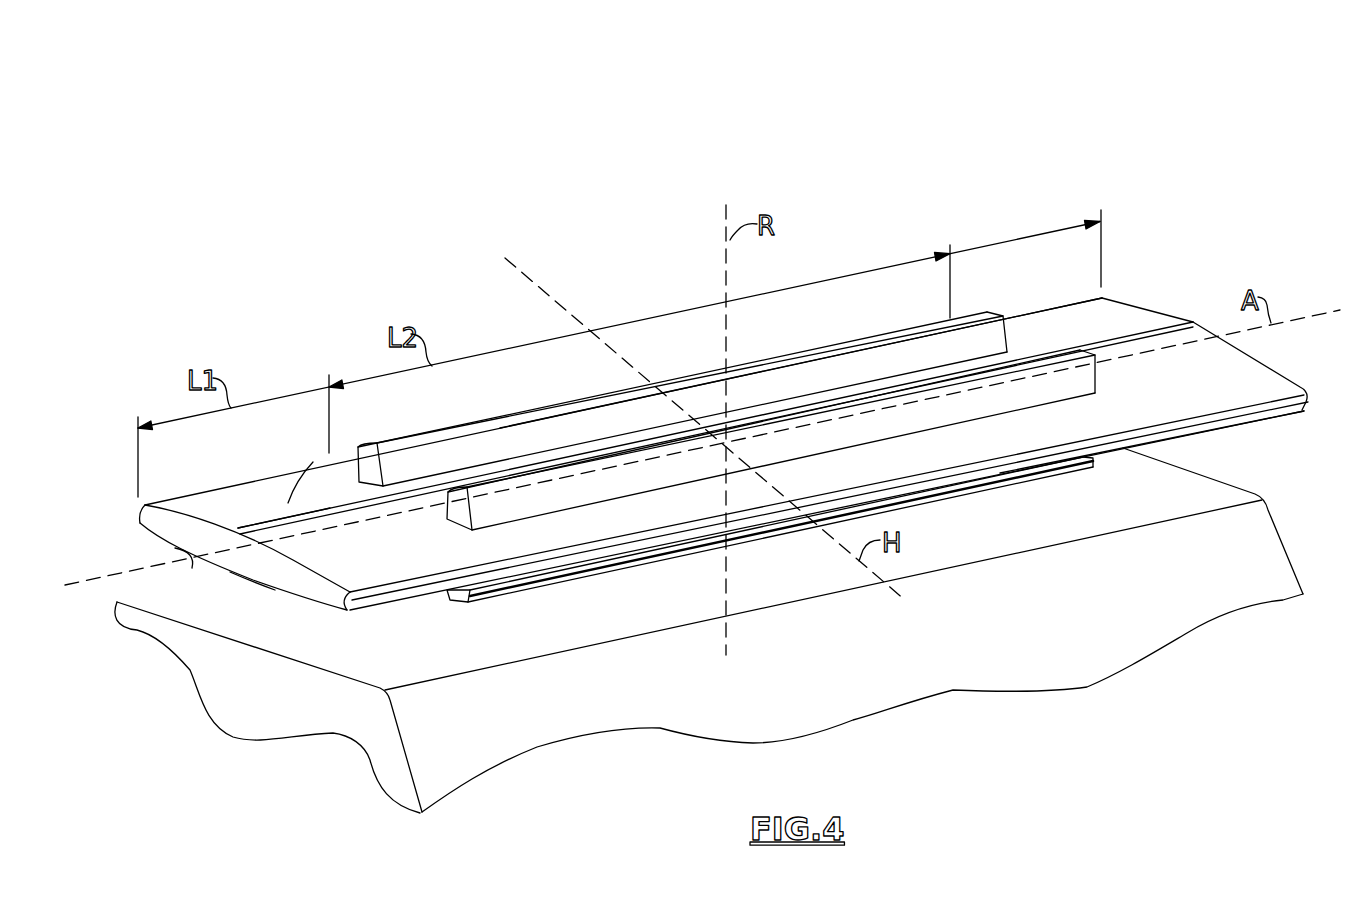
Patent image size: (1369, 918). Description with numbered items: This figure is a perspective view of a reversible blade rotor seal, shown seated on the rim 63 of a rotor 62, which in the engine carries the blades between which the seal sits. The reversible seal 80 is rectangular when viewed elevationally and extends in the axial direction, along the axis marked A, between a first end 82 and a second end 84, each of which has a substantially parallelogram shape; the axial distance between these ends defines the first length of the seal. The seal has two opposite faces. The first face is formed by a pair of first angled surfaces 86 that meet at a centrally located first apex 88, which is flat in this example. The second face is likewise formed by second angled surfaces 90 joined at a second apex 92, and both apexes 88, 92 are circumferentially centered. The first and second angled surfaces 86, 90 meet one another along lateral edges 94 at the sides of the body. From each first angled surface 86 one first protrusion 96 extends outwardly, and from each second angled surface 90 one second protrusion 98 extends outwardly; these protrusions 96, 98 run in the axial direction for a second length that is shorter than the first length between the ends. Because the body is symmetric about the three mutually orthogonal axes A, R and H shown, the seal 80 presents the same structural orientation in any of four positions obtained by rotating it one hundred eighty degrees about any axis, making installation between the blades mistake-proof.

The rotor 62 is at (370, 740).
The rim 63 is at (458, 655).
The reversible seal 80 is at (1100, 194).
The first end 82 is at (277, 585).
The second end 84 is at (1149, 312).
The first angled surfaces 86 is at (330, 548).
The first apex 88 is at (262, 530).
The second angled surfaces 90 is at (170, 567).
The second apex 92 is at (242, 586).
The lateral edges 94 is at (252, 480).
The first protrusions 96 is at (579, 462).
The second protrusions 98 is at (497, 586).